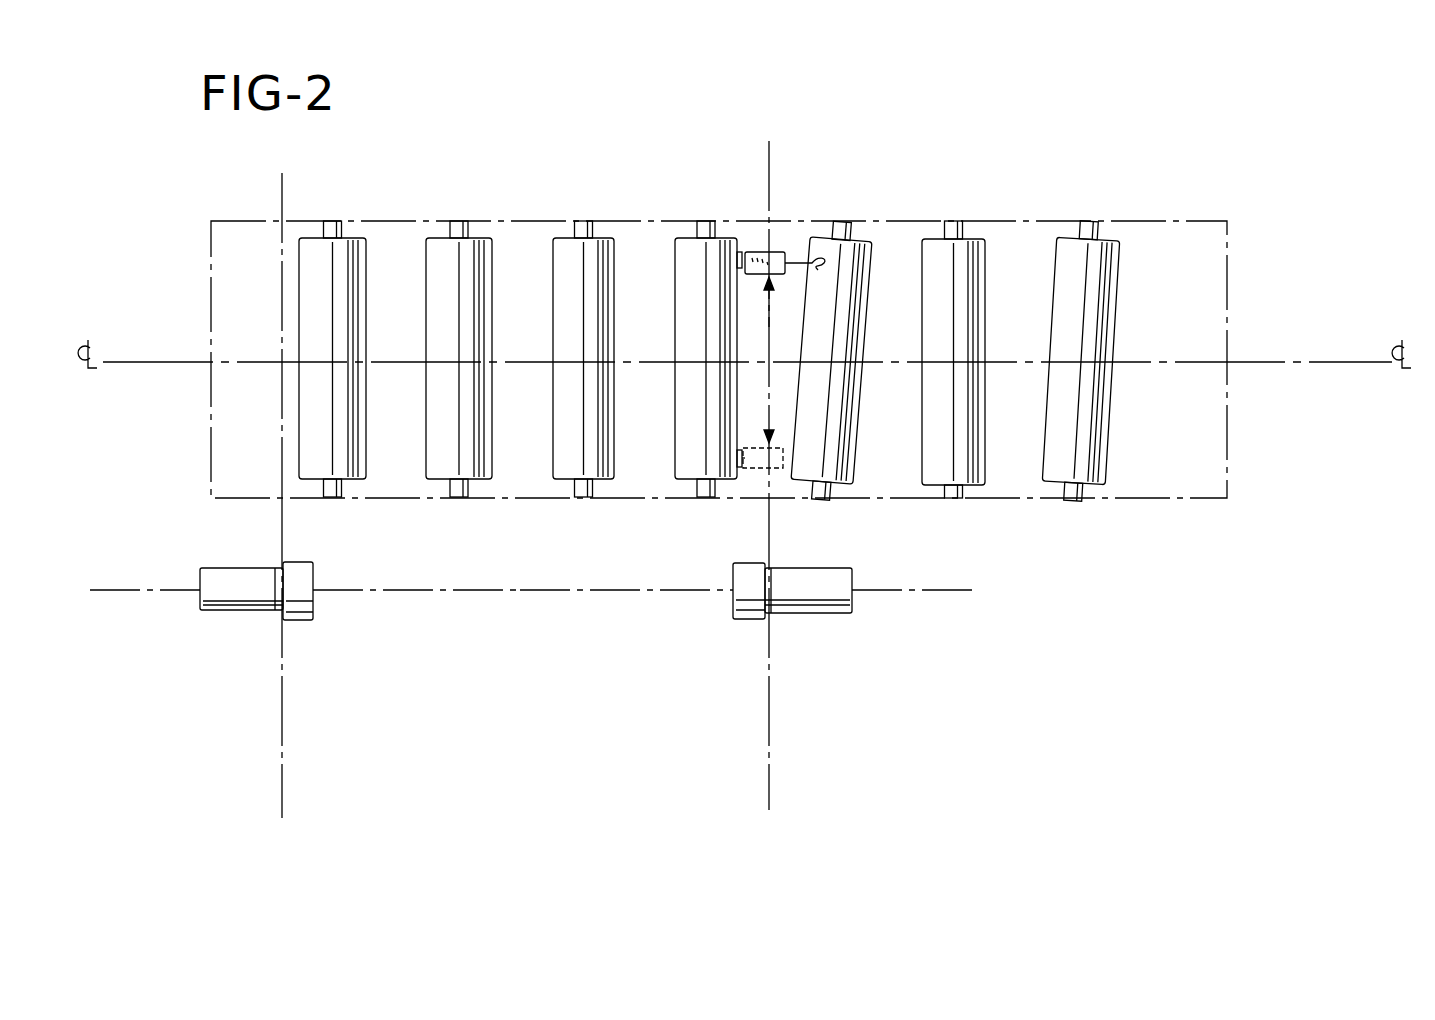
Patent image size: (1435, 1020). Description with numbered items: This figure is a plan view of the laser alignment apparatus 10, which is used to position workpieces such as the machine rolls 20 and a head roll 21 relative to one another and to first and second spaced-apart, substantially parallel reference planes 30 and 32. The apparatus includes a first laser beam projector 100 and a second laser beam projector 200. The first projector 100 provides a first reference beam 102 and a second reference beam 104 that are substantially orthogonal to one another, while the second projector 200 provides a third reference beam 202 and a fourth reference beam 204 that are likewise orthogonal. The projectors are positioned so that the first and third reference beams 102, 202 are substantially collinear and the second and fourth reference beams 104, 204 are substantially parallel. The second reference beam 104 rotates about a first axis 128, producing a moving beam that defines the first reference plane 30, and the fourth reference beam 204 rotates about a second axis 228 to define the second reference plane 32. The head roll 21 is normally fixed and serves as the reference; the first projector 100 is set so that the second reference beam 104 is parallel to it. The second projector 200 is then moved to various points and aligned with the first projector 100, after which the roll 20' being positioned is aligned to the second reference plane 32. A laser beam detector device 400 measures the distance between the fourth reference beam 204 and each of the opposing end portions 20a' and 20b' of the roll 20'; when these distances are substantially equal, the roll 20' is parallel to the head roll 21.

The laser alignment apparatus 10 is at (922, 738).
The machine rolls 20 is at (807, 360).
The roll currently being positioned 20' is at (678, 358).
The first end portion of roll 20a' is at (676, 208).
The second end portion of roll 20b' is at (661, 507).
The head roll 21 is at (345, 322).
The first reference plane 30 is at (284, 205).
The second reference plane 32 is at (772, 168).
The first laser beam projector 100 is at (217, 610).
The first reference beam 102 is at (383, 592).
The second reference beam 104 is at (282, 713).
The first axis 128 is at (120, 590).
The second laser beam projector 200 is at (853, 602).
The third reference beam 202 is at (645, 592).
The fourth reference beam 204 is at (769, 705).
The second axis 228 is at (887, 592).
The laser beam detector device 400 is at (778, 253).